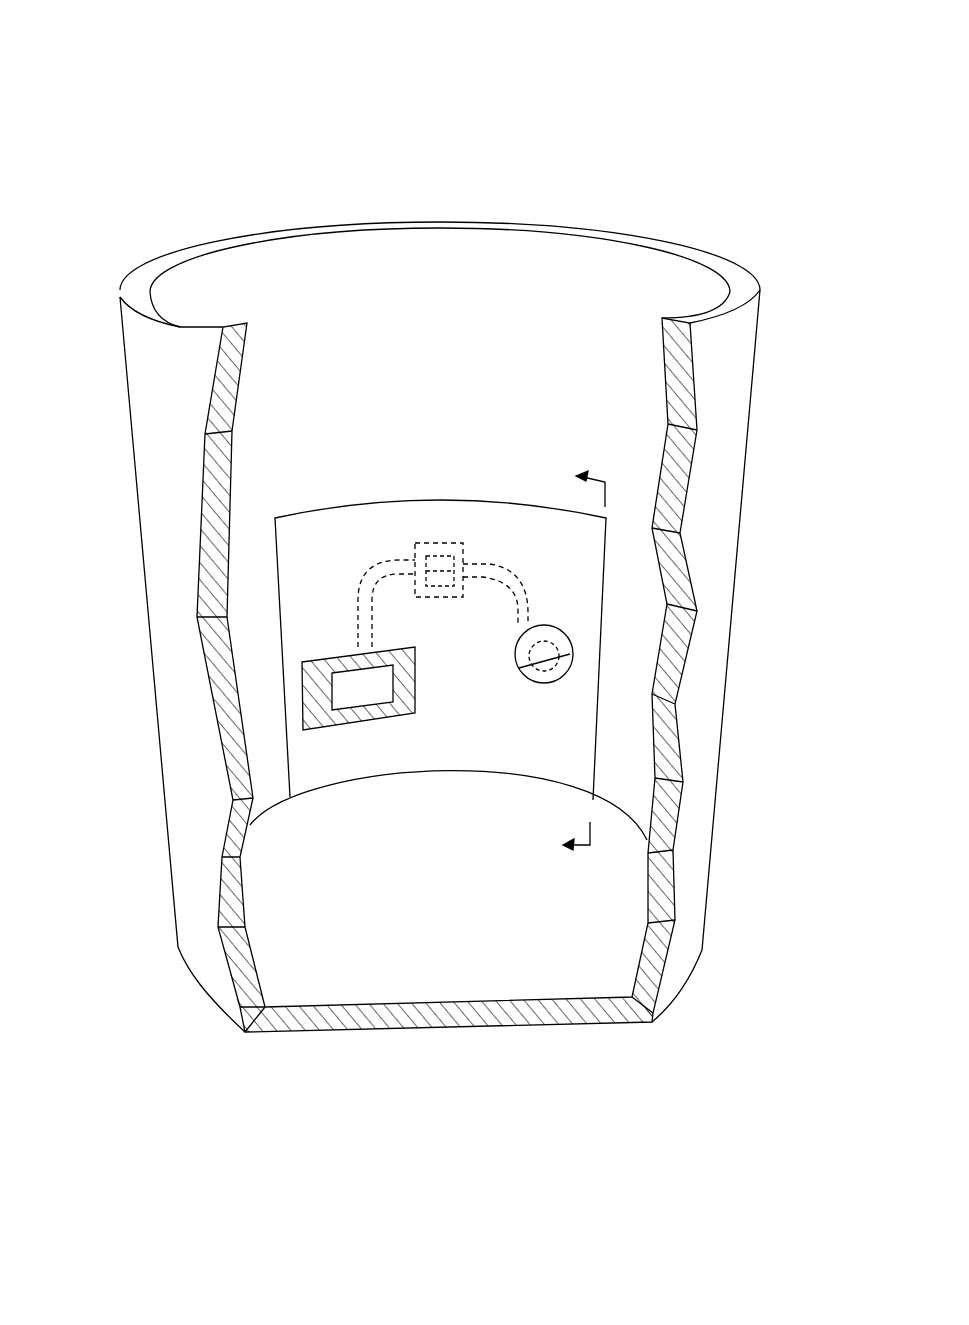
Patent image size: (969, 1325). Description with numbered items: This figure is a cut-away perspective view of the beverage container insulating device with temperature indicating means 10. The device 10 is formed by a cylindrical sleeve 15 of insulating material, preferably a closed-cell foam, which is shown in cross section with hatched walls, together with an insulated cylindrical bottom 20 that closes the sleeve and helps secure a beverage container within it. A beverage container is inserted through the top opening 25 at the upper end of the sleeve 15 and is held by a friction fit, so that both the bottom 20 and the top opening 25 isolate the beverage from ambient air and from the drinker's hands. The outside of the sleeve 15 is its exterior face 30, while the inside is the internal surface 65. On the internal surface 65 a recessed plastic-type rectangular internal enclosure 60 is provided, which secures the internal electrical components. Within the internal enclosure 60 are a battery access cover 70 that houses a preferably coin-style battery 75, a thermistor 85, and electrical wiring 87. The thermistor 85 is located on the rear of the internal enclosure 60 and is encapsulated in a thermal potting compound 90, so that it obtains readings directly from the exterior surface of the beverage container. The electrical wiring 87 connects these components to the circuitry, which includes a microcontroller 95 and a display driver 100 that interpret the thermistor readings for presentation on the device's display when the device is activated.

The beverage container insulating device with temperature indicating means 10 is at (104, 109).
The cylindrical sleeve 15 is at (758, 328).
The cylindrical bottom 20 is at (325, 1020).
The top opening 25 is at (535, 290).
The exterior face 30 is at (150, 548).
The internal enclosure 60 is at (583, 767).
The internal surface 65 is at (317, 370).
The battery access cover 70 is at (555, 675).
The battery 75 is at (517, 664).
The thermistor 85 is at (347, 693).
The electrical wiring 87 is at (373, 582).
The thermal potting compound 90 is at (317, 687).
The microcontroller 95 is at (440, 584).
The display driver 100 is at (440, 553).